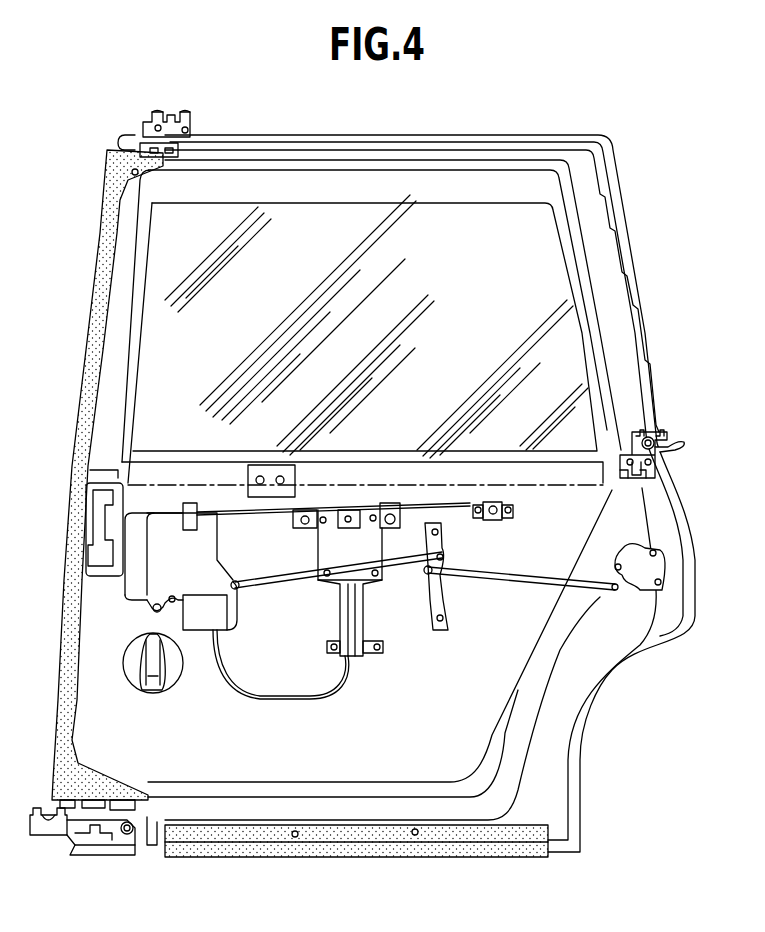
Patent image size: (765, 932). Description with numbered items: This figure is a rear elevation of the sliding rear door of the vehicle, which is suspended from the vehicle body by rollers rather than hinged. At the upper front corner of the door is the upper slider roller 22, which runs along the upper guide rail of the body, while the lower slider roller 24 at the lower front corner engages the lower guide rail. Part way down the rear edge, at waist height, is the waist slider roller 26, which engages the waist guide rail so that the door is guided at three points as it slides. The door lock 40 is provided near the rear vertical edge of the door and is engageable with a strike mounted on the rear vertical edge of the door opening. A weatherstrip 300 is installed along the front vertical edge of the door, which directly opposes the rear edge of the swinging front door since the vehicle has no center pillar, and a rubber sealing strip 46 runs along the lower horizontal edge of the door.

The upper slider roller 22 is at (172, 112).
The lower slider roller 24 is at (38, 835).
The waist slider roller 26 is at (647, 430).
The door lock 40 is at (650, 592).
The rubber sealing strip 46 is at (398, 848).
The weatherstrip 300 is at (100, 292).